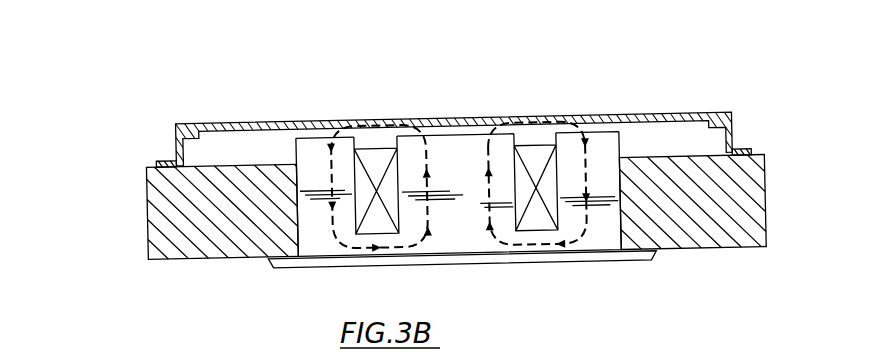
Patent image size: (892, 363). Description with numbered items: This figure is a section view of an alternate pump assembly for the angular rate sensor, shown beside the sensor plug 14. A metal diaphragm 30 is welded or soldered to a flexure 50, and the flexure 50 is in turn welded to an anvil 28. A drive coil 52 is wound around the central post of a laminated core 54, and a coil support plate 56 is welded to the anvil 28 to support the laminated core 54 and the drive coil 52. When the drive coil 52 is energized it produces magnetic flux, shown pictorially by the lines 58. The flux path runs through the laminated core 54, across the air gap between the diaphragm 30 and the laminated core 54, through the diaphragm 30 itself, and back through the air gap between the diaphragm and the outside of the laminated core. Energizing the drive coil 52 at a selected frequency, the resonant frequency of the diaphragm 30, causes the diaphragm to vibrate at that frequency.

The sensor plug 14 is at (150, 238).
The anvil 28 is at (705, 252).
The diaphragm 30 is at (300, 120).
The flexure 50 is at (177, 150).
The drive coil 52 is at (362, 167).
The laminated core 54 is at (297, 153).
The coil support plate 56 is at (500, 266).
The magnetic flux lines 58 is at (393, 122).